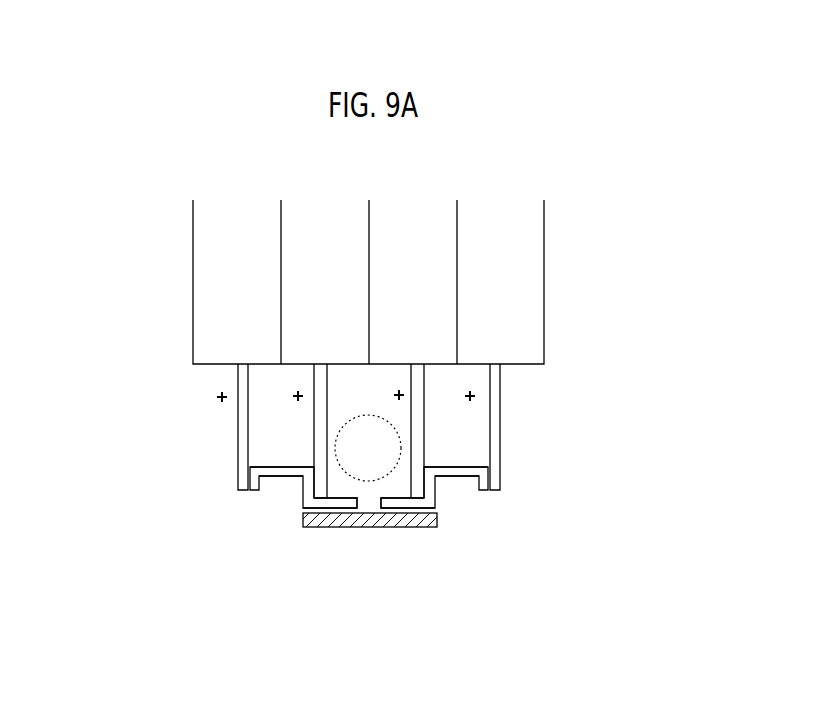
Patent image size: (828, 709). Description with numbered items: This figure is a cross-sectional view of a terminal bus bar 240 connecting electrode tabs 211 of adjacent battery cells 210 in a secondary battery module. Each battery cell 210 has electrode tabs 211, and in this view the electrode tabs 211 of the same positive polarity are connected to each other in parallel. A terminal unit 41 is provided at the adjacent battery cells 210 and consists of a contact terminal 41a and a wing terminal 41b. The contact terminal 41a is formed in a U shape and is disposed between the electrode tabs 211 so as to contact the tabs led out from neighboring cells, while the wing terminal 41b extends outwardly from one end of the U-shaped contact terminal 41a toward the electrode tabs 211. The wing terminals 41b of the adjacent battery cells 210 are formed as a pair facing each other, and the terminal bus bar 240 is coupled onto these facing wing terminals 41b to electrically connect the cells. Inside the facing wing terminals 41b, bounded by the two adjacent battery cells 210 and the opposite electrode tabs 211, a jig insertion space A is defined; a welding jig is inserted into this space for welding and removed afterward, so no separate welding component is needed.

The battery cell 210 is at (218, 283).
The electrode tab 211 is at (240, 431).
The terminal unit 41 is at (248, 495).
The contact terminal 41a is at (288, 476).
The wing terminal 41b is at (330, 520).
The terminal bus bar 240 is at (370, 528).
The jig insertion space A is at (402, 432).